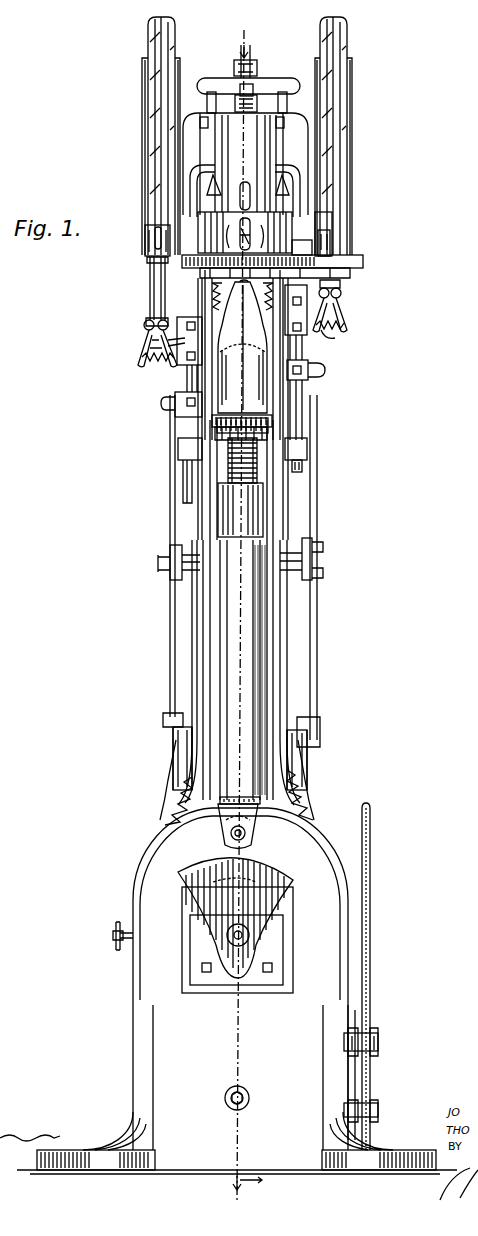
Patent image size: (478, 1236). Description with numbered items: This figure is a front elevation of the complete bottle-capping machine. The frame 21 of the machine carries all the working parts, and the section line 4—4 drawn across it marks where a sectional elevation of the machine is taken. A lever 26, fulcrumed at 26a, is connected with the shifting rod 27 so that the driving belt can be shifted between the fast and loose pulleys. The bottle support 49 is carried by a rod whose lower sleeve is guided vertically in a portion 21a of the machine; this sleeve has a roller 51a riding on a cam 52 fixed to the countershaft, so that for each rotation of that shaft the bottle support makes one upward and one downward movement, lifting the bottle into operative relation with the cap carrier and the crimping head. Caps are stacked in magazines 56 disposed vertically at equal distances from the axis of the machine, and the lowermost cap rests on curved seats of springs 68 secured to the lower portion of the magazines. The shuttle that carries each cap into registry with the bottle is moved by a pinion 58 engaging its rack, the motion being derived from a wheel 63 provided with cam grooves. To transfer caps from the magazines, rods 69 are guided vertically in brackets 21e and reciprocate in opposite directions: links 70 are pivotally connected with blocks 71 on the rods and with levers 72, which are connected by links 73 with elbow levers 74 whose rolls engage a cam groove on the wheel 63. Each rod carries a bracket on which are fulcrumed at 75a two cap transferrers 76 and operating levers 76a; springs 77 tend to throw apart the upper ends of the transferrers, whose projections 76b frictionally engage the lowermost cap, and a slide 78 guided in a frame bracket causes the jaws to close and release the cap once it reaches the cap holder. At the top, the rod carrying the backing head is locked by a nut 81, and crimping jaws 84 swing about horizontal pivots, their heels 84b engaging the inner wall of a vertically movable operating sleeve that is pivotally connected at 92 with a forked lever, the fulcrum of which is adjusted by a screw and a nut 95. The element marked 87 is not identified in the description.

The section line 4— 4 is at (247, 618).
The magazine 56 is at (160, 44).
The nut 95 is at (236, 66).
The nut 81 is at (260, 90).
The heel 84b is at (364, 172).
The pivotal connection 92 is at (195, 222).
The supporting plate 87 is at (345, 246).
The spring 68 is at (145, 246).
The slide 78 is at (148, 273).
The projection 76b is at (148, 300).
The cap transferrer 76 is at (143, 326).
The pinion 58 is at (140, 366).
The fulcrum 75a is at (343, 294).
The operating lever 76a is at (349, 315).
The spring 77 is at (335, 338).
The block 71 is at (312, 357).
The rod 69 is at (186, 380).
The bottle support 49 is at (270, 430).
The bracket 21e is at (308, 450).
The link 70 is at (172, 433).
The crimping jaw 84 is at (241, 479).
The lever 72 is at (168, 556).
The link 73 is at (172, 613).
The portion of machine 21a is at (238, 670).
The frame 21 is at (290, 663).
The elbow lever 74 is at (176, 752).
The wheel 63 is at (170, 798).
The roller 51a is at (255, 836).
The cam 52 is at (280, 882).
The lever 26 is at (372, 900).
The shifting rod 27 is at (378, 1038).
The fulcrum 26a is at (378, 1110).